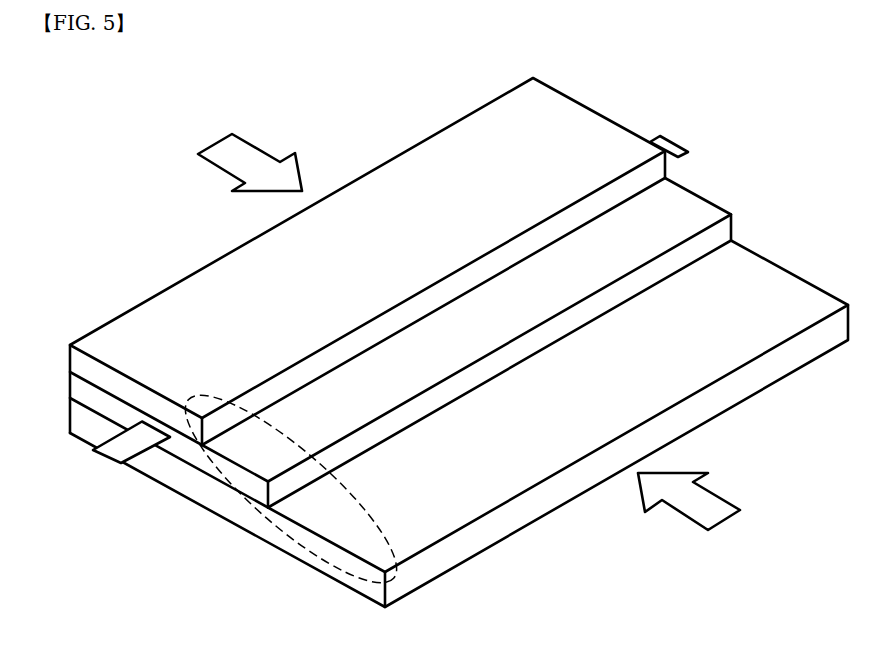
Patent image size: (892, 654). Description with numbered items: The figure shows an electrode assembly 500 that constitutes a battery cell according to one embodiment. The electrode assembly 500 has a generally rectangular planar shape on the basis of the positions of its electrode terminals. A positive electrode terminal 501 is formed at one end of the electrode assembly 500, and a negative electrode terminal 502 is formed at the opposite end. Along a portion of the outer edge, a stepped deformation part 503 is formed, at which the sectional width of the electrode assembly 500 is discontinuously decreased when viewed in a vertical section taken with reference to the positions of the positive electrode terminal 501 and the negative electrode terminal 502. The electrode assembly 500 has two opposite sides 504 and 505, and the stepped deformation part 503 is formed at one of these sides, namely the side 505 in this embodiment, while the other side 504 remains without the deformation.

The electrode assembly 500 is at (110, 120).
The positive electrode terminal 501 is at (105, 455).
The negative electrode terminal 502 is at (673, 143).
The stepped deformation part 503 is at (367, 512).
The side of the electrode assembly 504 is at (233, 155).
The side of the electrode assembly 505 is at (709, 514).